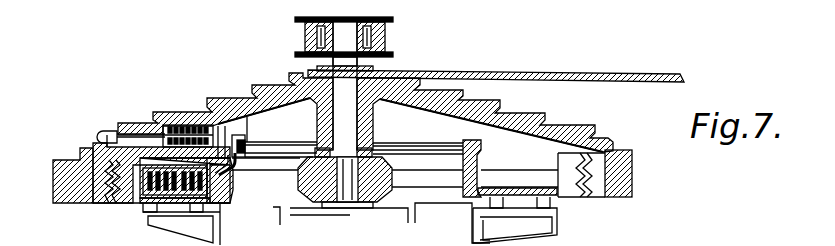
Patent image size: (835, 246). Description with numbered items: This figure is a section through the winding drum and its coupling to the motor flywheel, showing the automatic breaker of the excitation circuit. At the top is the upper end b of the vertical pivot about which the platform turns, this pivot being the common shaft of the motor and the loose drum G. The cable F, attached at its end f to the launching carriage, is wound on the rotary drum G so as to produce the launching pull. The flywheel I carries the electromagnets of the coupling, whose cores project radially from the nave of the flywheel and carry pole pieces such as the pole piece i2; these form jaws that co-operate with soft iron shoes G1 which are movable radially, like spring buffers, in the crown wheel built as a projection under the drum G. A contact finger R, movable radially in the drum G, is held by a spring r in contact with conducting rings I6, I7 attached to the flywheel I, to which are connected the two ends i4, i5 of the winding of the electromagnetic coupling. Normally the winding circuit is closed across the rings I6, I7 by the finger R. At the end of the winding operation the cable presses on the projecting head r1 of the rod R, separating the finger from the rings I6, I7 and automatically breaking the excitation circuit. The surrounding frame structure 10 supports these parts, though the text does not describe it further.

The upper end of vertical pivot b is at (345, 38).
The end of cable f is at (389, 72).
The cable F is at (631, 76).
The rotary drum G is at (276, 88).
The contact finger R is at (246, 136).
The frame plate 10 is at (236, 180).
The shoe G1 is at (98, 206).
The pole piece i2 is at (125, 197).
The spring r is at (190, 128).
The end of winding i5 is at (228, 192).
The end of winding i4 is at (228, 138).
The projecting head r1 is at (103, 137).
The conducting ring I6 is at (402, 133).
The conducting ring I7 is at (437, 152).
The flywheel I is at (477, 164).